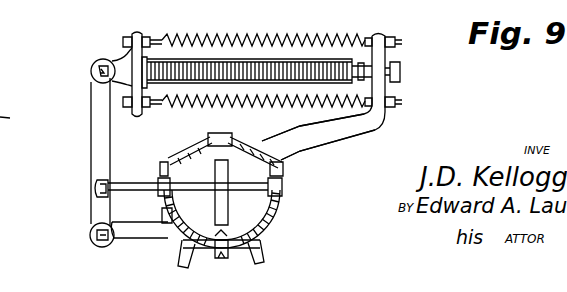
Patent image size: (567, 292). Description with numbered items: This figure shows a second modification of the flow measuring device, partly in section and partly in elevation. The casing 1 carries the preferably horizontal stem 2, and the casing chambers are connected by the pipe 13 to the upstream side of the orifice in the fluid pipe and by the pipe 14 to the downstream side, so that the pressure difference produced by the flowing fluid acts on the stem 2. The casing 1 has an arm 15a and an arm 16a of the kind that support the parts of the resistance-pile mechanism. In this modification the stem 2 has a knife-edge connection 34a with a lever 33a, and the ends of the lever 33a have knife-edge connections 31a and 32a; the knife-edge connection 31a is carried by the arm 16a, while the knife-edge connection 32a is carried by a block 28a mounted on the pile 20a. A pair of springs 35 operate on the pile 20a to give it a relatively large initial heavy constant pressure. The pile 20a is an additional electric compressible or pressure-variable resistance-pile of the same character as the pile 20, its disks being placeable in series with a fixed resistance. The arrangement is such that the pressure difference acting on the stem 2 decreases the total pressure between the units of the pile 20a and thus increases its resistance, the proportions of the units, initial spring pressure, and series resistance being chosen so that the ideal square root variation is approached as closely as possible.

The casing 1 is at (260, 232).
The stem 2 is at (188, 192).
The pipe 13 is at (265, 257).
The pipe 14 is at (192, 268).
The arm 15a is at (317, 147).
The arm 16a is at (139, 244).
The pile 20 is at (259, 41).
The pile 20a is at (192, 57).
The block 28a is at (118, 60).
The knife-edge connection 31a is at (91, 72).
The knife-edge connection 32a is at (90, 237).
The lever 33a is at (110, 167).
The knife-edge connection 34a is at (92, 186).
The springs 35 is at (263, 71).